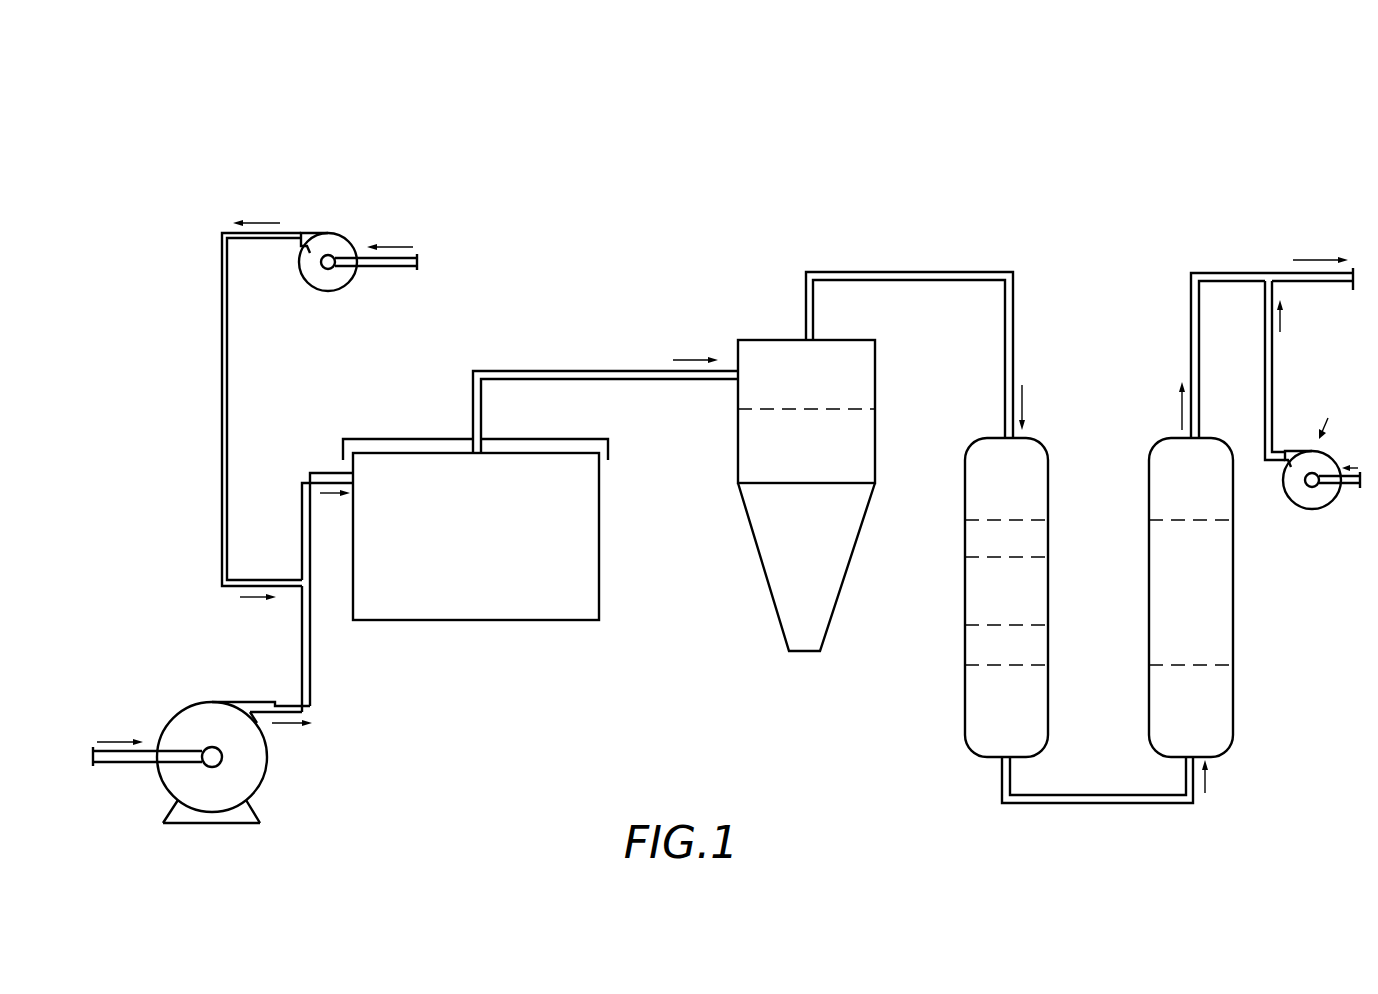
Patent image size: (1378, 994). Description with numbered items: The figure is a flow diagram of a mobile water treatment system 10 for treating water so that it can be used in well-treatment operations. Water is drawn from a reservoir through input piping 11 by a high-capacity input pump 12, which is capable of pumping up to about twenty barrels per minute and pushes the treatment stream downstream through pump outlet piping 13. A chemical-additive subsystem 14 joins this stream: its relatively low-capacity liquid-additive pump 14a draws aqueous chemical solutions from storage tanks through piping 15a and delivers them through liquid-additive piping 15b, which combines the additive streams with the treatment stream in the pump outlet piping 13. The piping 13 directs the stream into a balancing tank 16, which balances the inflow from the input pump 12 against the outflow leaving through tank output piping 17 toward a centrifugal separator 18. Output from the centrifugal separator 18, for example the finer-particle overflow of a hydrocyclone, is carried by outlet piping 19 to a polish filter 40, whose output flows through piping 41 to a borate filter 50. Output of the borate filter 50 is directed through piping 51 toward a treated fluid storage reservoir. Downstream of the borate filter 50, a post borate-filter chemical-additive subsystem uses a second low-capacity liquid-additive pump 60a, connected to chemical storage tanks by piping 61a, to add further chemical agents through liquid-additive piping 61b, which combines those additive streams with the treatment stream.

The system 10 is at (970, 184).
The input piping 11 is at (125, 764).
The input pump 12 is at (265, 773).
The pump outlet piping 13 is at (313, 665).
The chemical-additive subsystem 14 is at (330, 218).
The liquid-additive pump 14a is at (340, 230).
The piping 15a is at (397, 273).
The liquid-additive piping 15b is at (220, 352).
The balancing tank 16 is at (455, 552).
The tank output piping 17 is at (571, 370).
The centrifugal separator 18 is at (793, 460).
The outlet piping 19 is at (903, 272).
The polish filter 40 is at (998, 607).
The piping 41 is at (1090, 807).
The borate filter 50 is at (1178, 608).
The piping 51 is at (1225, 272).
The liquid-additive pump 60a is at (1295, 502).
The piping 61a is at (1352, 487).
The liquid-additive piping 61b is at (1272, 380).